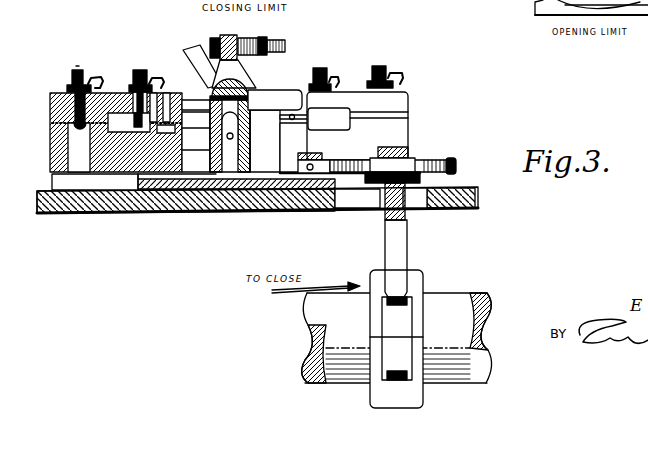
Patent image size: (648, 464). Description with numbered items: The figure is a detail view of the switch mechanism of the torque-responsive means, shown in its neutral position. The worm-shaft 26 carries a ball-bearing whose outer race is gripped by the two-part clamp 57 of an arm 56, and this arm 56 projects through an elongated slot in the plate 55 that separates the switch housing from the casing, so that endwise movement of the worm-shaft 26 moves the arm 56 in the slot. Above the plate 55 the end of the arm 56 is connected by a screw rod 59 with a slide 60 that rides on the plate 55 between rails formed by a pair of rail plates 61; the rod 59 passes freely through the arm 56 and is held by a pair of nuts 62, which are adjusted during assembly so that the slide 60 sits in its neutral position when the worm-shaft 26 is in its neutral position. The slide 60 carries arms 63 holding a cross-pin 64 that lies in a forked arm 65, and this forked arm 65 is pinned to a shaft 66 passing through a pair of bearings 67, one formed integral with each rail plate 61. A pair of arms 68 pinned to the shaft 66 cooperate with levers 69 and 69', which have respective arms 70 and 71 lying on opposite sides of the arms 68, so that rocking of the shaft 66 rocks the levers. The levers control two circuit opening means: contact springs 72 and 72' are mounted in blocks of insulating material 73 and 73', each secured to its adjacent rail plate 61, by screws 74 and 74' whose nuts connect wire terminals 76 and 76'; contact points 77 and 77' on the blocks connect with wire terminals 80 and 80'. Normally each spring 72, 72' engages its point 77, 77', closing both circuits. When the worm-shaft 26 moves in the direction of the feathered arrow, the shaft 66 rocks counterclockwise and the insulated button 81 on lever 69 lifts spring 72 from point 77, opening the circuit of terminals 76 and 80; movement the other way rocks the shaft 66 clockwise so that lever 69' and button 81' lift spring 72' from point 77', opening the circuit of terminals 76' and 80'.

The worm-shaft 26 is at (397, 338).
The plate 55 is at (474, 208).
The arm 56 is at (393, 238).
The two-part clamp 57 is at (417, 350).
The screw rod 59 is at (452, 172).
The slide 60 is at (300, 195).
The rail plates 61 is at (190, 176).
The nuts 62 is at (448, 168).
The arms 63 is at (230, 173).
The cross-pin 64 is at (250, 149).
The forked arm 65 is at (212, 160).
The shaft 66 is at (248, 122).
The bearings 67 is at (208, 122).
The arms 68 is at (231, 32).
The lever 69 is at (190, 91).
The lever 69' is at (275, 90).
The arm 70 is at (256, 34).
The arm 71 is at (193, 48).
The contact spring 72 is at (193, 138).
The contact spring 72' is at (386, 119).
The block of insulating material 73 is at (103, 121).
The block of insulating material 73' is at (394, 126).
The screw 74 is at (73, 106).
The screw 74' is at (395, 66).
The wire terminal 76 is at (101, 65).
The wire terminal 76' is at (422, 76).
The contact point 77 is at (129, 136).
The contact point 77' is at (317, 135).
The wire terminal 80 is at (146, 79).
The wire terminal 80' is at (328, 68).
The insulated button 81 is at (160, 126).
The button 81' is at (294, 146).